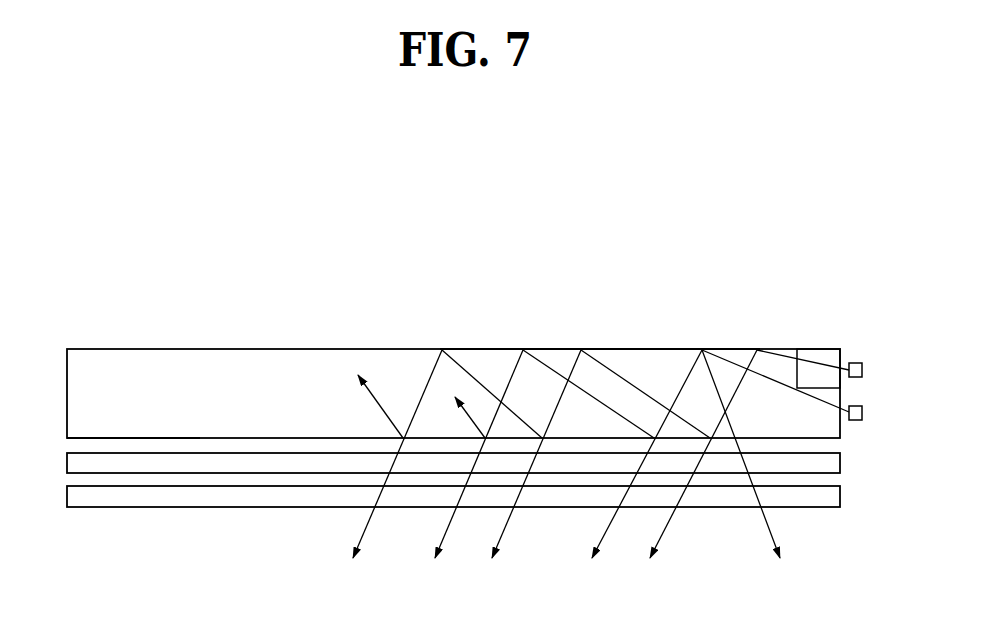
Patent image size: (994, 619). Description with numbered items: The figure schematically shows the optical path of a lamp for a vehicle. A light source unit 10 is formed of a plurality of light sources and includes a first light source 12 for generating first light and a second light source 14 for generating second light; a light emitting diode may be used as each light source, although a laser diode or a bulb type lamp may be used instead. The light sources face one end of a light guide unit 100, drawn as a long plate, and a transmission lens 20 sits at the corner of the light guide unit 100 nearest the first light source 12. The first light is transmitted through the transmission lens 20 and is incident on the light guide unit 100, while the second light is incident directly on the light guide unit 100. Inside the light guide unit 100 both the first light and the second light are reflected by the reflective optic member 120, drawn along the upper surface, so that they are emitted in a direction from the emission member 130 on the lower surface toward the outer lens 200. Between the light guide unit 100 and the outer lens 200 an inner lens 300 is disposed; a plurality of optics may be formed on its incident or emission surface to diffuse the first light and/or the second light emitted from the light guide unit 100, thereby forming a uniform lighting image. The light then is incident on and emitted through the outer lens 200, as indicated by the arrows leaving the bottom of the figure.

The light guide unit 100 is at (192, 377).
The reflective optic member 120 is at (652, 350).
The emission member 130 is at (70, 441).
The transmission lens 20 is at (827, 357).
The light source unit 10 is at (891, 391).
The first light source 12 is at (863, 370).
The second light source 14 is at (874, 413).
The inner lens 300 is at (841, 464).
The outer lens 200 is at (841, 498).